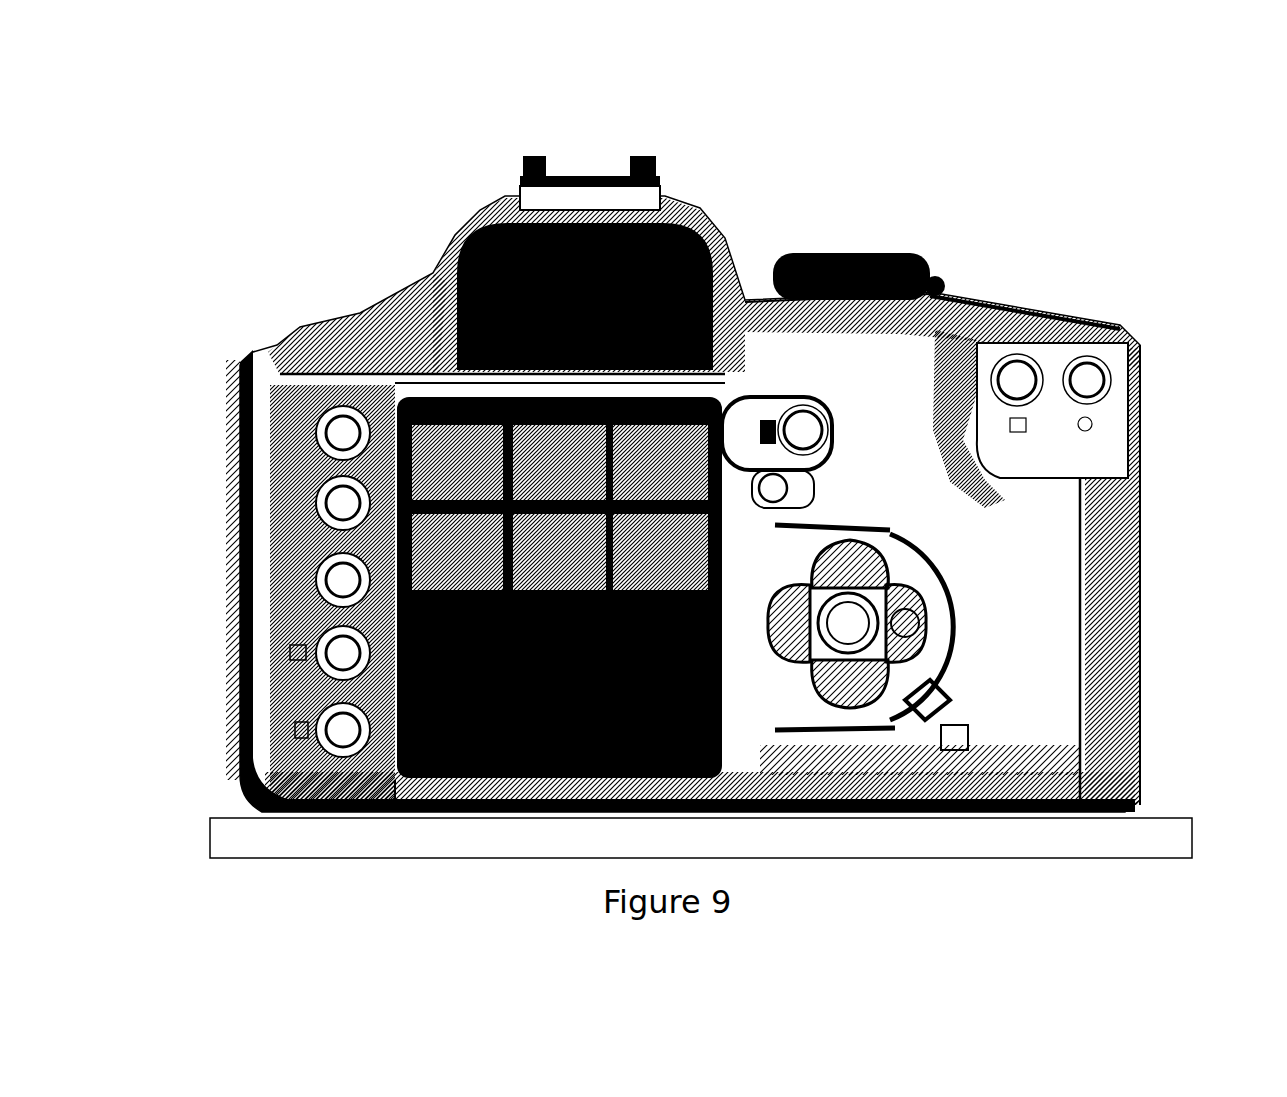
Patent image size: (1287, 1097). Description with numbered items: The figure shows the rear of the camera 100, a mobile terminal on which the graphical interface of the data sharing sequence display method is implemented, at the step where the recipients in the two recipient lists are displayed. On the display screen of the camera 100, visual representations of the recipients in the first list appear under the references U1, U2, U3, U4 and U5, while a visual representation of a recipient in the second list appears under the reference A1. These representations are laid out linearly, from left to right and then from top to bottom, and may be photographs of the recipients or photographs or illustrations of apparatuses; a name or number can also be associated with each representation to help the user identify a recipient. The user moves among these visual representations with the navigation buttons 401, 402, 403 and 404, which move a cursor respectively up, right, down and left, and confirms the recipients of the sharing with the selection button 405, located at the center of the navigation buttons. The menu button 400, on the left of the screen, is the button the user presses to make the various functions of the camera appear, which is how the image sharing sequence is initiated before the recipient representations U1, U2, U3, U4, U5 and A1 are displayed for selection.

The camera 100 is at (241, 750).
The menu button 400 is at (330, 417).
The navigation button (up) 401 is at (885, 560).
The navigation button (right) 402 is at (905, 607).
The navigation button (down) 403 is at (847, 678).
The navigation button (left) 404 is at (787, 660).
The selection button 405 is at (875, 630).
The visual representation of recipient in first list U1 is at (505, 490).
The visual representation of recipient in first list U2 is at (453, 283).
The visual representation of recipient in first list U3 is at (663, 397).
The visual representation of recipient in first list U4 is at (330, 712).
The visual representation of recipient in first list U5 is at (410, 785).
The visual representation of recipient in second list A1 is at (510, 778).